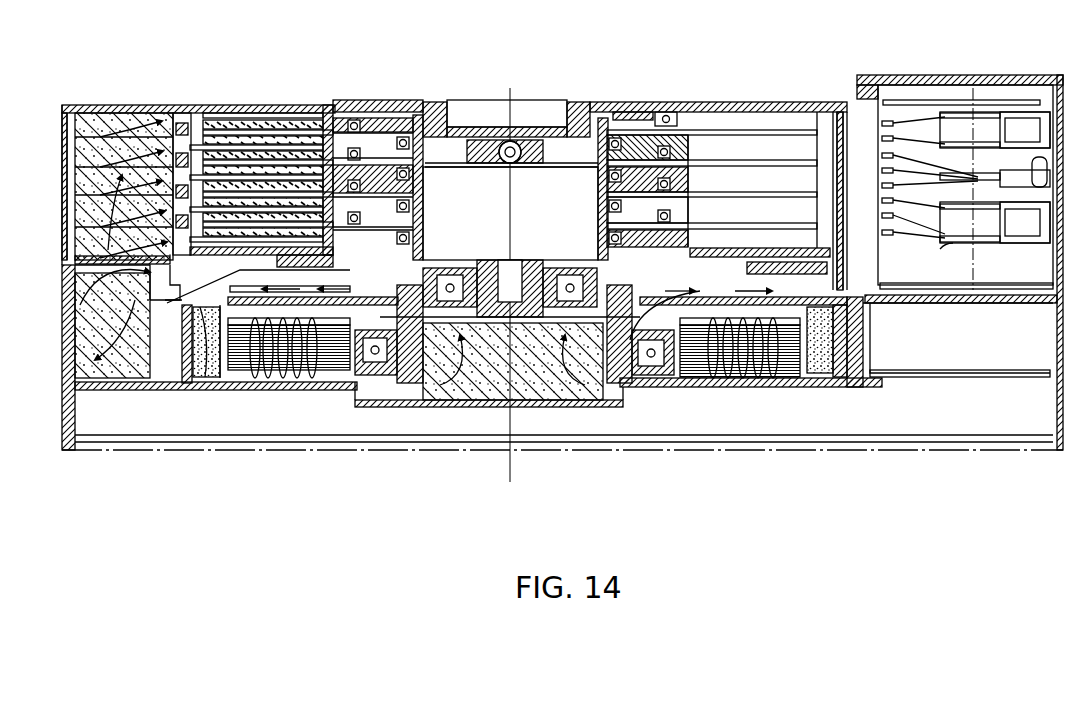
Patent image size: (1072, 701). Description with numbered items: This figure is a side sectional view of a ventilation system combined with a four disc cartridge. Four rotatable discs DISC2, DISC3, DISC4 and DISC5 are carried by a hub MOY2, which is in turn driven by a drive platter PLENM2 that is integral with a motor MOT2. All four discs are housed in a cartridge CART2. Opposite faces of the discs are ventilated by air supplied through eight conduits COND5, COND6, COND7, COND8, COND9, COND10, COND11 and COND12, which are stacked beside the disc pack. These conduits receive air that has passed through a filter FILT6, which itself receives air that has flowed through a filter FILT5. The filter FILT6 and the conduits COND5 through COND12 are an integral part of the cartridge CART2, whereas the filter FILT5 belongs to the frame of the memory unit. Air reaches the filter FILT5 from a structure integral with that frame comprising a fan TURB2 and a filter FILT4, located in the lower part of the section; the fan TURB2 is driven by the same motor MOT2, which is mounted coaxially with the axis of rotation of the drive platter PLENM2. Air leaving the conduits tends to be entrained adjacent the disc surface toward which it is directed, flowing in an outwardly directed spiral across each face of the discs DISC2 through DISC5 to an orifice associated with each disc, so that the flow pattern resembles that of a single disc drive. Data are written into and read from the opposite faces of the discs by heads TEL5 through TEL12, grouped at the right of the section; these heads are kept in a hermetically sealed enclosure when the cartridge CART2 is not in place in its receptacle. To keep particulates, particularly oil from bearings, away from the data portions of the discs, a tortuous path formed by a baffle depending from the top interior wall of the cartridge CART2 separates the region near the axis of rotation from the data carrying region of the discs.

The filter FILT6 is at (108, 122).
The conduit COND5 is at (193, 118).
The conduit COND6 is at (202, 147).
The conduit COND7 is at (261, 186).
The conduit COND8 is at (335, 153).
The conduit COND9 is at (542, 186).
The conduit COND10 is at (335, 210).
The conduit COND11 is at (546, 211).
The conduit COND12 is at (337, 257).
The drive platter PLENM2 is at (597, 263).
The hub MOY2 is at (590, 105).
The cartridge CART2 is at (718, 163).
The rotatable disc DISC2 is at (707, 130).
The rotatable disc DISC3 is at (711, 157).
The rotatable disc DISC4 is at (711, 190).
The rotatable disc DISC5 is at (711, 222).
The head TEL5 is at (923, 237).
The head TEL12 is at (966, 215).
The filter FILT5 is at (130, 378).
The fan TURB2 is at (225, 380).
The motor MOT2 is at (307, 373).
The filter FILT4 is at (487, 403).